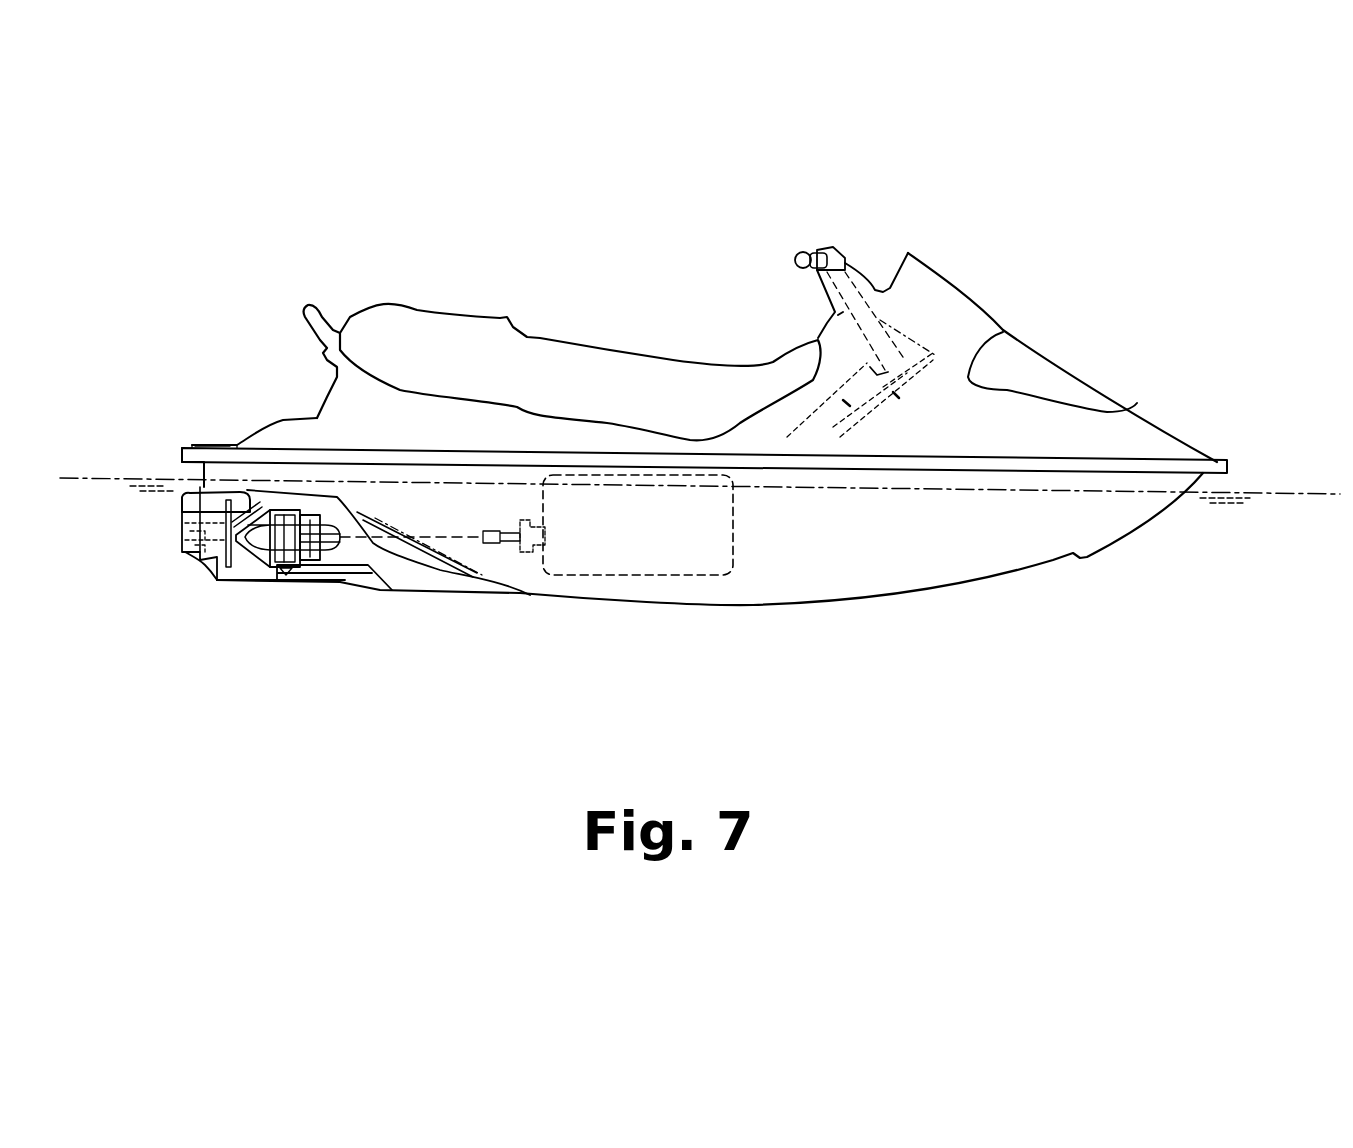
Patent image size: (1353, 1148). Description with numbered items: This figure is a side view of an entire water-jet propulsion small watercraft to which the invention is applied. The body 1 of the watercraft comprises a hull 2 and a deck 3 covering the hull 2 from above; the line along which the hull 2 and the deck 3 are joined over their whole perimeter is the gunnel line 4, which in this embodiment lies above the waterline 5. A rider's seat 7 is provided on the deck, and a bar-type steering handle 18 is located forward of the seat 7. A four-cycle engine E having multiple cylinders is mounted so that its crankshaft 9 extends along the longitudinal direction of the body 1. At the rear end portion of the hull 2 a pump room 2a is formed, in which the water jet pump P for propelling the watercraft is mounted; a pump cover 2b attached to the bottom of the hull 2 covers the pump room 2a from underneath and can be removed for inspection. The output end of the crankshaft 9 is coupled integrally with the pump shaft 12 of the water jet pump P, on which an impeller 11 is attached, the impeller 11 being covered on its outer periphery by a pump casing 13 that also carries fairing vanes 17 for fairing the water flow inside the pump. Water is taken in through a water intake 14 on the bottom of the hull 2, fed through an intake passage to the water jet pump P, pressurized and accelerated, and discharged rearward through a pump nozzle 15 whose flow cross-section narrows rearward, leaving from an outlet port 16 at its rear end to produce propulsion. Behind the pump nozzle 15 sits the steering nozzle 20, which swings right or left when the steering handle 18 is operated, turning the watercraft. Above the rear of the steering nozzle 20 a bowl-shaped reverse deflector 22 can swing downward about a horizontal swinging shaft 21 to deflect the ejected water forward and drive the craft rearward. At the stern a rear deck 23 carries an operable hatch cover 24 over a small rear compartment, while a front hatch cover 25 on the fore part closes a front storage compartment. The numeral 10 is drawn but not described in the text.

The body 1 is at (1257, 298).
The hull 2 is at (1203, 473).
The pump room 2a is at (297, 583).
The pump cover 2b is at (267, 583).
The deck 3 is at (1198, 452).
The gunnel line 4 is at (180, 452).
The waterline 5 is at (105, 477).
The seat 7 is at (375, 320).
The crankshaft 9 is at (543, 575).
The water intake duct 10 is at (387, 538).
The impeller 11 is at (313, 583).
The pump shaft 12 is at (267, 570).
The pump casing 13 is at (293, 580).
The water intake 14 is at (447, 587).
The pump nozzle 15 is at (247, 570).
The outlet port 16 is at (180, 546).
The fairing vanes 17 is at (296, 505).
The steering handle 18 is at (802, 255).
The steering nozzle 20 is at (200, 567).
The swinging shaft 21 is at (183, 533).
The reverse deflector 22 is at (183, 496).
The rear deck 23 is at (203, 445).
The hatch cover 24 is at (225, 445).
The front hatch cover 25 is at (1037, 360).
The engine E is at (733, 545).
The water jet pump P is at (280, 507).